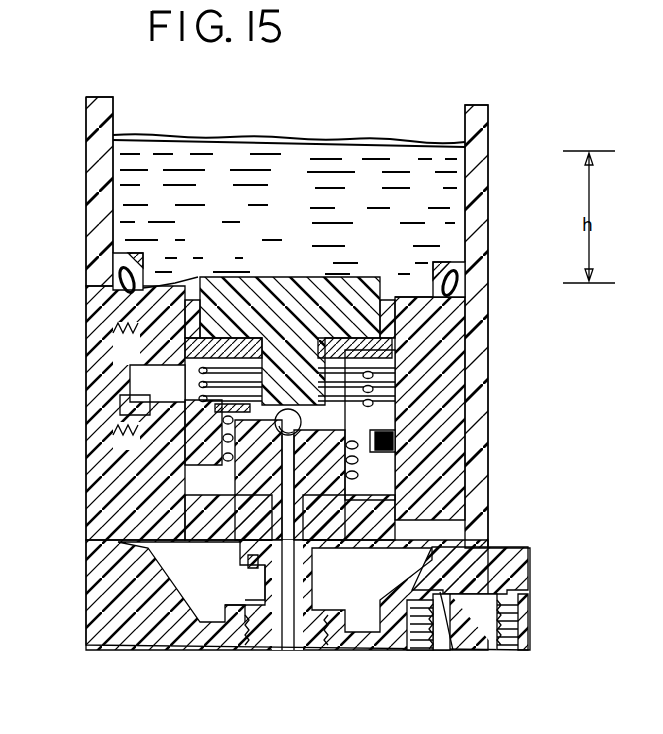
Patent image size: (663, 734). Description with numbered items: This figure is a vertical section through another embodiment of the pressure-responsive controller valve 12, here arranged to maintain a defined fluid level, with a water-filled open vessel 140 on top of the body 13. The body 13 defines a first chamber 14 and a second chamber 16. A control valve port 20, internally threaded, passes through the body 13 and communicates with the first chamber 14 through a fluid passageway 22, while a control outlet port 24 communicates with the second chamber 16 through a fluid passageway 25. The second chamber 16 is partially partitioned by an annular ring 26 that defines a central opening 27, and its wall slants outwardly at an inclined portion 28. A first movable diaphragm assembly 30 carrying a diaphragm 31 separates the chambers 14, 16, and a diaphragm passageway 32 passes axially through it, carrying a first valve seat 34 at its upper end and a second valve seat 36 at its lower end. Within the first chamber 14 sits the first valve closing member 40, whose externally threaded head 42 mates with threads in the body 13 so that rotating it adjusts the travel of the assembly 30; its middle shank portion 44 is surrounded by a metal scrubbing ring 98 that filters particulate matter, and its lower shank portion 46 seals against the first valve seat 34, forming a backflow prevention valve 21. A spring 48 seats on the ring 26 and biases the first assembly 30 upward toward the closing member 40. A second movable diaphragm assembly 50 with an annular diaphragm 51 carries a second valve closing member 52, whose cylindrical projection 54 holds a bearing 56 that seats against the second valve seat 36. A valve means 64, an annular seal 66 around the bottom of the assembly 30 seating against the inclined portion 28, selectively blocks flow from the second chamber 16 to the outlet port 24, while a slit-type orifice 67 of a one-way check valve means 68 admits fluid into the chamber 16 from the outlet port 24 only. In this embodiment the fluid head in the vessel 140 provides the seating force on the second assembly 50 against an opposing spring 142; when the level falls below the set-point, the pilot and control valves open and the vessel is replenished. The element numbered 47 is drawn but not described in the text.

The controller valve 12 is at (200, 660).
The body 13 is at (96, 648).
The first chamber 14 is at (150, 556).
The second chamber 16 is at (450, 372).
The control valve port 20 is at (502, 650).
The backflow prevention valve 21 is at (288, 648).
The fluid passageway 22 is at (450, 606).
The control outlet port 24 is at (130, 428).
The fluid passageway 25 is at (130, 407).
The annular ring 26 is at (277, 416).
The central opening 27 is at (291, 412).
The inclined portion 28 is at (190, 385).
The first movable diaphragm assembly 30 is at (440, 506).
The diaphragm 31 is at (455, 535).
The diaphragm passageway 32 is at (248, 563).
The first valve seat 34 is at (430, 496).
The second valve seat 36 is at (440, 472).
The first valve closing member 40 is at (258, 652).
The head 42 is at (318, 640).
The middle shank portion 44 is at (268, 590).
The lower shank portion 46 is at (318, 582).
The spring seat 47 is at (170, 493).
The spring 48 is at (170, 473).
The second movable diaphragm assembly 50 is at (222, 278).
The annular diaphragm 51 is at (413, 293).
The second valve closing member 52 is at (130, 300).
The cylindrical projection 54 is at (420, 355).
The bearing 56 is at (392, 416).
The valve means 64 is at (405, 445).
The annular seal 66 is at (150, 446).
The slit-type orifice 67 is at (135, 380).
The one-way check valve means 68 is at (182, 370).
The scrubbing ring 98 is at (340, 575).
The open vessel 140 is at (167, 140).
The spring 142 is at (420, 386).